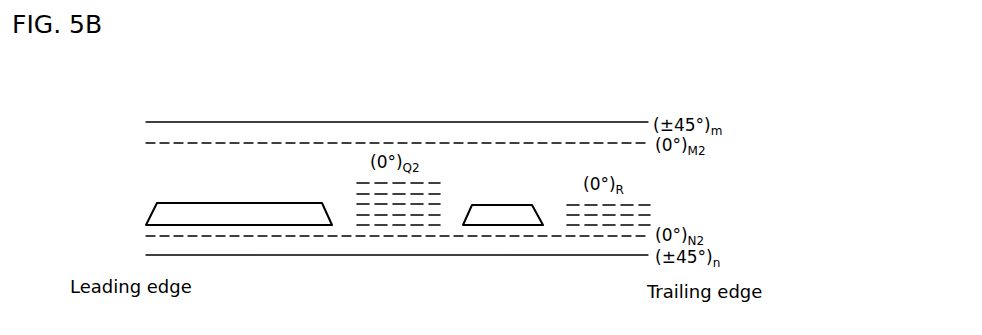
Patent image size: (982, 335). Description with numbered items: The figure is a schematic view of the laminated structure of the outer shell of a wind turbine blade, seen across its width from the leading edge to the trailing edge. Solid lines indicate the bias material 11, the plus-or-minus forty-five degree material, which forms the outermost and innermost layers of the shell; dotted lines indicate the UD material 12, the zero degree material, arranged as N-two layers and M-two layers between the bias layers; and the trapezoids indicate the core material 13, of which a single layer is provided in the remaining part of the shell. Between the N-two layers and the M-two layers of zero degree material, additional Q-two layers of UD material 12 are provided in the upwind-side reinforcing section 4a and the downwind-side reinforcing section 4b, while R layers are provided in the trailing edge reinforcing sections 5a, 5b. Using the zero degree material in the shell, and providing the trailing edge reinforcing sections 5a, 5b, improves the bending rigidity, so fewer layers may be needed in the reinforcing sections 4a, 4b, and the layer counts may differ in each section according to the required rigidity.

The bias material 11 is at (233, 255).
The UD material 12 is at (573, 206).
The core material 13 is at (292, 203).
The upwind-side reinforcing section 4a is at (435, 292).
The downwind-side reinforcing section 4b is at (393, 263).
The trailing edge reinforcing section 5a is at (643, 304).
The trailing edge reinforcing section 5b is at (602, 275).